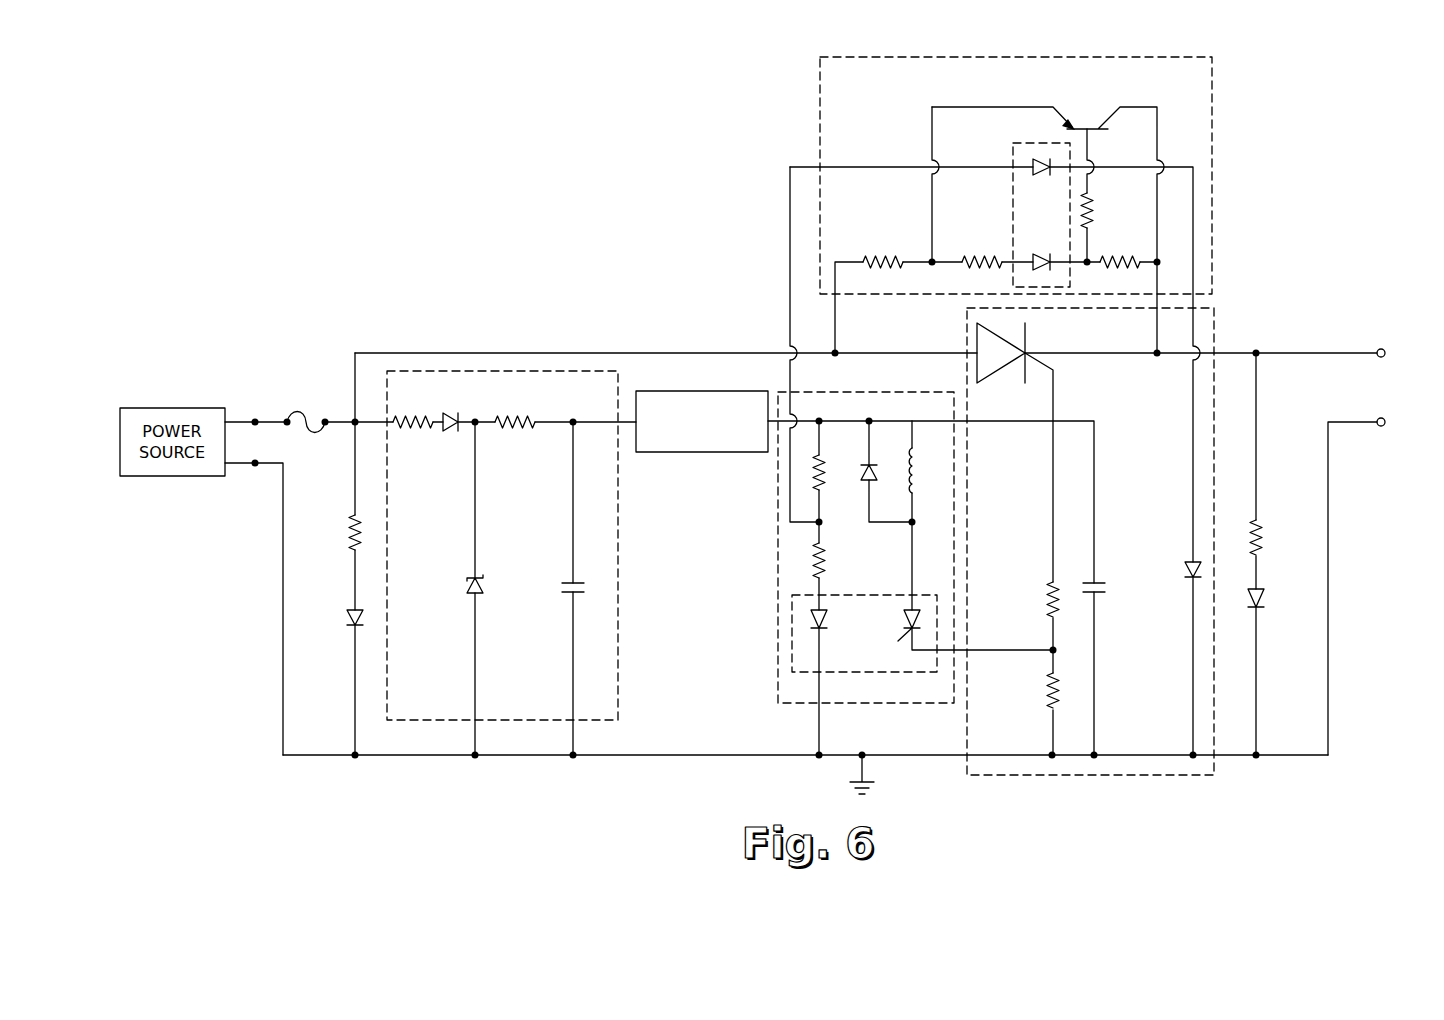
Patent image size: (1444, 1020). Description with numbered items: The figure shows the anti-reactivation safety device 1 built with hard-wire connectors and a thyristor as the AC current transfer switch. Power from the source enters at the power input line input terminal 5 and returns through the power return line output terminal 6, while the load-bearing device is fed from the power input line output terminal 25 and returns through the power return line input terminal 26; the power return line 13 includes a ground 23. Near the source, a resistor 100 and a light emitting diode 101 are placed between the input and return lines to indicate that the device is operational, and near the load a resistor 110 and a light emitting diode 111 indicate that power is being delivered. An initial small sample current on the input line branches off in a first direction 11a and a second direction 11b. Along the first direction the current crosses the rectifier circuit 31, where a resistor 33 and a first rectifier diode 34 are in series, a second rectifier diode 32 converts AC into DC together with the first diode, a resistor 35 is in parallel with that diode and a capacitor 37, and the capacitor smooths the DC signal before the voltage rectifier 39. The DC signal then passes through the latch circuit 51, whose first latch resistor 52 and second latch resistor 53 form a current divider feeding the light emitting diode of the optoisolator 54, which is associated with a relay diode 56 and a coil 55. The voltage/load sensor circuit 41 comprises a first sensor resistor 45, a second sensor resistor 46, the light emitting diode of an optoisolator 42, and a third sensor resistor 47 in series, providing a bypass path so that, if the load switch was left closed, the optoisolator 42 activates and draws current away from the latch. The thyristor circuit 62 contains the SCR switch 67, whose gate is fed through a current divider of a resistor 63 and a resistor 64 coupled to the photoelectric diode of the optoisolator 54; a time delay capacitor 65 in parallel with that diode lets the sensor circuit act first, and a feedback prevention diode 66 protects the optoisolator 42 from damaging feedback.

The anti-reactivation safety device 1 is at (477, 158).
The power input line input terminal 5 is at (257, 419).
The power return line output terminal 6 is at (255, 467).
The first direction 11a is at (365, 418).
The second direction 11b is at (362, 352).
The power return line 13 is at (1330, 525).
The ground 23 is at (866, 770).
The power input line output terminal 25 is at (1383, 348).
The power return line input terminal 26 is at (1384, 427).
The rectifier circuit 31 is at (548, 563).
The second rectifier diode 32 is at (471, 584).
The resistor 33 is at (412, 418).
The first rectifier diode 34 is at (451, 431).
The resistor 35 is at (510, 418).
The capacitor 37 is at (557, 562).
The voltage rectifier 39 is at (703, 455).
The voltage/load sensor circuit 41 is at (1052, 406).
The optoisolator 42 is at (1012, 154).
The first sensor resistor 45 is at (890, 258).
The second sensor resistor 46 is at (990, 258).
The third sensor resistor 47 is at (1113, 258).
The latch circuit 51 is at (868, 573).
The first latch resistor 52 is at (824, 480).
The second latch resistor 53 is at (824, 562).
The optoisolator 54 is at (788, 634).
The coil 55 is at (918, 482).
The relay diode 56 is at (875, 472).
The thyristor circuit 62 is at (1141, 527).
The resistor 63 is at (1047, 600).
The resistor 64 is at (1047, 688).
The time delay capacitor 65 is at (1106, 590).
The feedback prevention diode 66 is at (1186, 566).
The SCR switch 67 is at (1004, 366).
The resistor 100 is at (352, 535).
The diode 101 is at (349, 620).
The resistor 110 is at (1262, 530).
The diode 111 is at (1264, 600).